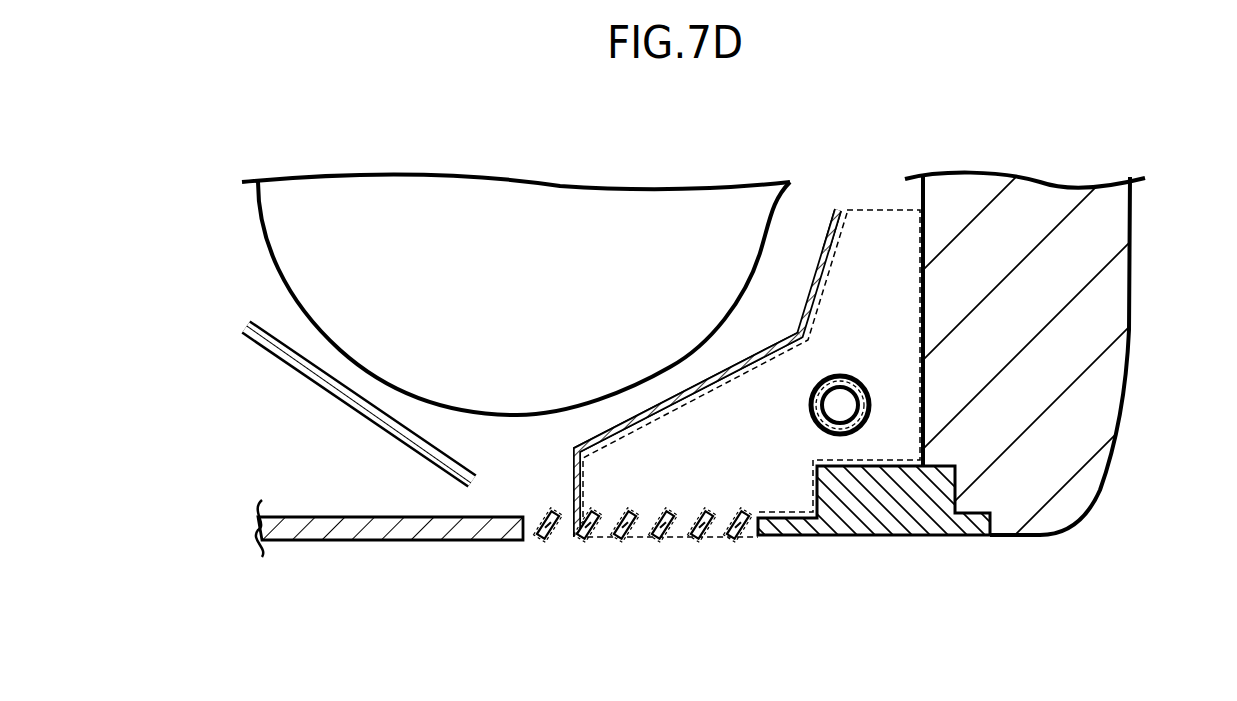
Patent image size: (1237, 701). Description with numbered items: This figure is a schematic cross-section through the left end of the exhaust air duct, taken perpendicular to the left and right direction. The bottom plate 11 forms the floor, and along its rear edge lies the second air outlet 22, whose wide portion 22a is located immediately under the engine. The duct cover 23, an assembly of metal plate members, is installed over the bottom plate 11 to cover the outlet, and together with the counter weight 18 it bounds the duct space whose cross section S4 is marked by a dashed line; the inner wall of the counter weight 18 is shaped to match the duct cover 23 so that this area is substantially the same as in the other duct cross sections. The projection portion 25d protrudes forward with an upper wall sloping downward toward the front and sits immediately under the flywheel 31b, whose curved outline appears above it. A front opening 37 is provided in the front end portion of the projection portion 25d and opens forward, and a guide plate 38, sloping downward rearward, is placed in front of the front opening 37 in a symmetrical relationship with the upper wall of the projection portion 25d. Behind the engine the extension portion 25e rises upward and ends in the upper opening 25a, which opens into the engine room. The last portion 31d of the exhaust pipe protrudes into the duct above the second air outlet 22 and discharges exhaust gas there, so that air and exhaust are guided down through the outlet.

The flywheel 31b is at (278, 270).
The guide plate 38 is at (307, 381).
The bottom plate 11 is at (377, 541).
The front opening 37 is at (576, 485).
The wide portion 22a is at (597, 538).
The second air outlet 22 is at (753, 530).
The duct cover 23 is at (815, 260).
The projection portion 25d is at (698, 386).
The extension portion 25e is at (829, 222).
The upper opening 25a is at (882, 209).
The cross section S4 is at (890, 342).
The counter weight 18 is at (1113, 303).
The last portion 31d is at (872, 407).